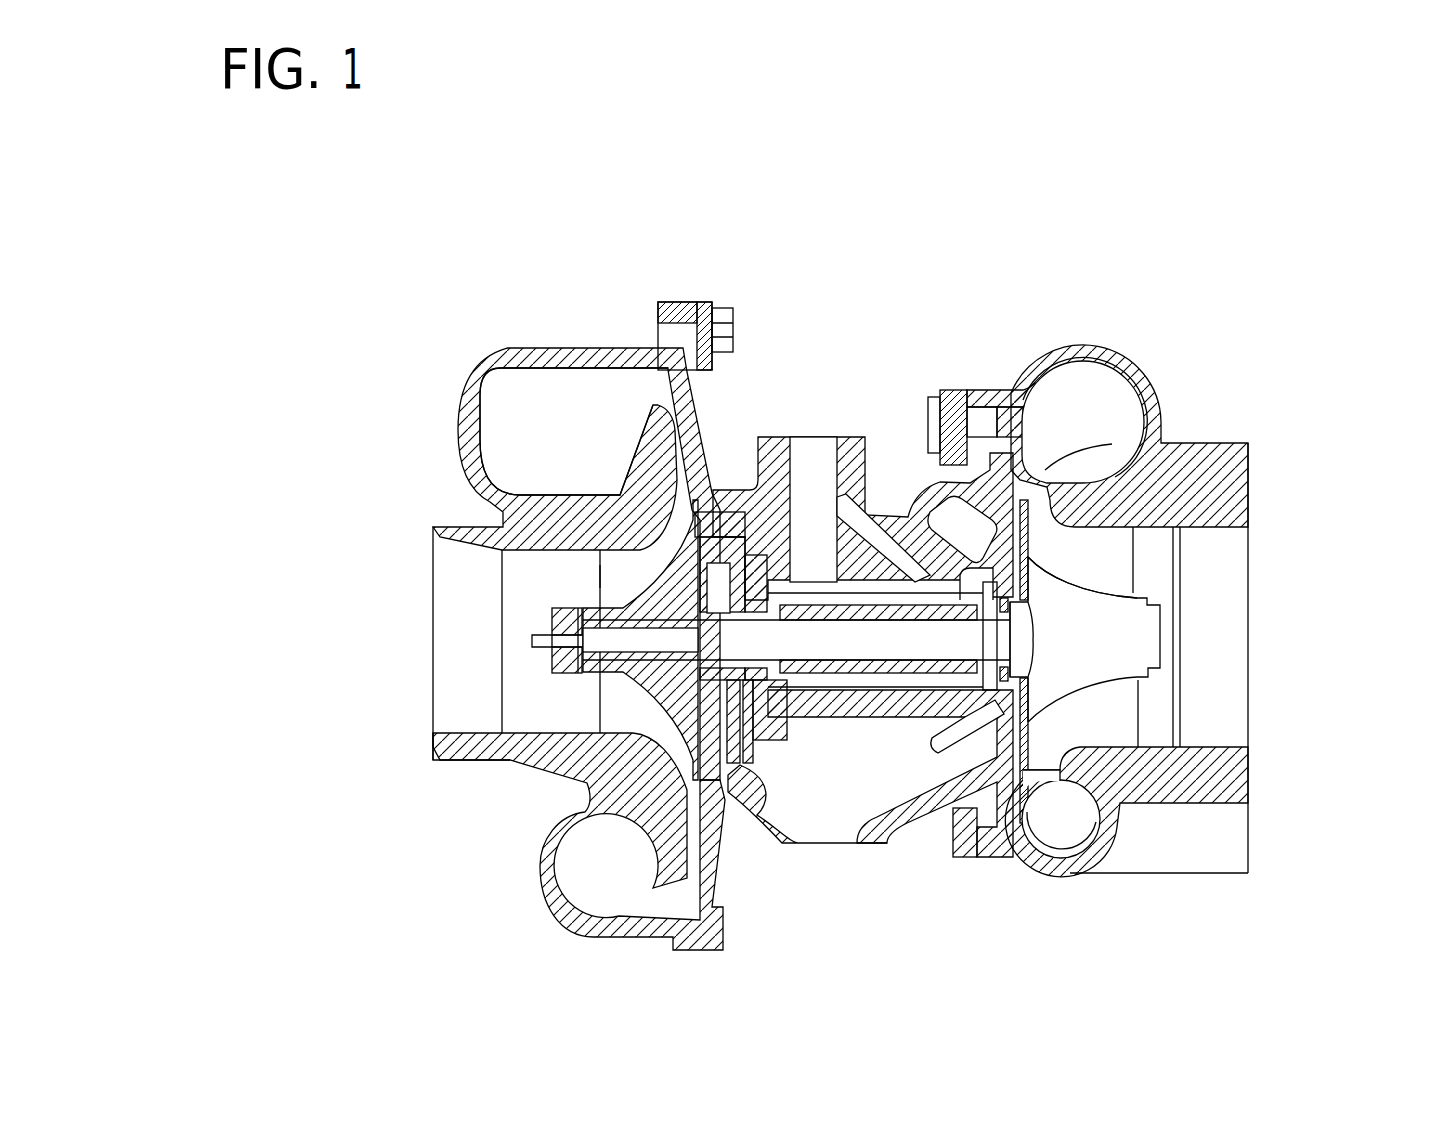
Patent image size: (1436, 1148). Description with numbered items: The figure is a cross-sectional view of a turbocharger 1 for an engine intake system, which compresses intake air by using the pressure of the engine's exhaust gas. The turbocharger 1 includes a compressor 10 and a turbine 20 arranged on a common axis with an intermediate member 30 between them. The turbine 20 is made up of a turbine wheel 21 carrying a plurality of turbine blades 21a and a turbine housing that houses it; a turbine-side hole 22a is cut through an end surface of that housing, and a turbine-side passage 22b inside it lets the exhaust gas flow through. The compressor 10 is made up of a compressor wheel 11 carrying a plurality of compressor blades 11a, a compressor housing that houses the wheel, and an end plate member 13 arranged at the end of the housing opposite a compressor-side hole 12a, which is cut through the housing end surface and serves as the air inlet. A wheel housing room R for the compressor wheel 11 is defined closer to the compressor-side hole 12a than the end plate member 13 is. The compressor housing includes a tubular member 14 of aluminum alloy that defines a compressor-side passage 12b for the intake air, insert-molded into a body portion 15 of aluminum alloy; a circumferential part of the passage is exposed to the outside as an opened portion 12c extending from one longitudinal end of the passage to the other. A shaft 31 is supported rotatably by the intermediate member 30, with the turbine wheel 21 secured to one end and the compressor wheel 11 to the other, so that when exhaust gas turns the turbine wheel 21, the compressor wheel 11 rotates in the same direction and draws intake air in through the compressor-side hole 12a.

The turbocharger 1 is at (788, 288).
The compressor 10 is at (1153, 371).
The compressor wheel 11 is at (1137, 556).
The compressor blades 11a is at (1120, 580).
The compressor-side hole 12a is at (1246, 751).
The compressor-side passage 12b is at (1060, 440).
The opened portion 12c is at (1047, 478).
The end plate member 13 is at (985, 828).
The tubular member 14 is at (1108, 350).
The body portion 15 is at (968, 393).
The turbine 20 is at (505, 348).
The turbine wheel 21 is at (600, 565).
The turbine blades 21a is at (597, 702).
The turbine-side hole 22a is at (440, 742).
The turbine-side passage 22b is at (542, 440).
The intermediate member 30 is at (882, 535).
The shaft 31 is at (852, 640).
The wheel housing room R is at (1222, 700).